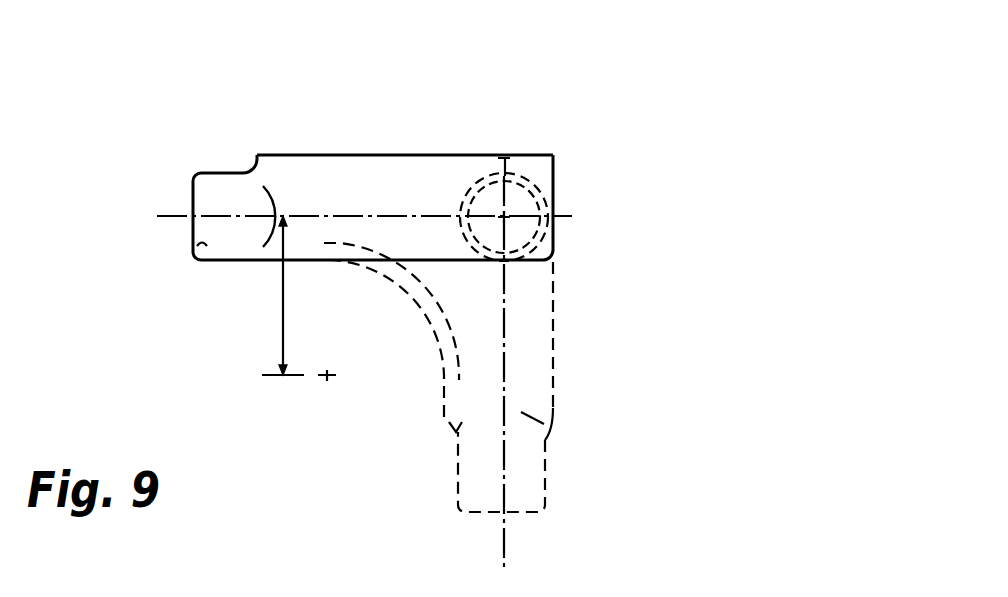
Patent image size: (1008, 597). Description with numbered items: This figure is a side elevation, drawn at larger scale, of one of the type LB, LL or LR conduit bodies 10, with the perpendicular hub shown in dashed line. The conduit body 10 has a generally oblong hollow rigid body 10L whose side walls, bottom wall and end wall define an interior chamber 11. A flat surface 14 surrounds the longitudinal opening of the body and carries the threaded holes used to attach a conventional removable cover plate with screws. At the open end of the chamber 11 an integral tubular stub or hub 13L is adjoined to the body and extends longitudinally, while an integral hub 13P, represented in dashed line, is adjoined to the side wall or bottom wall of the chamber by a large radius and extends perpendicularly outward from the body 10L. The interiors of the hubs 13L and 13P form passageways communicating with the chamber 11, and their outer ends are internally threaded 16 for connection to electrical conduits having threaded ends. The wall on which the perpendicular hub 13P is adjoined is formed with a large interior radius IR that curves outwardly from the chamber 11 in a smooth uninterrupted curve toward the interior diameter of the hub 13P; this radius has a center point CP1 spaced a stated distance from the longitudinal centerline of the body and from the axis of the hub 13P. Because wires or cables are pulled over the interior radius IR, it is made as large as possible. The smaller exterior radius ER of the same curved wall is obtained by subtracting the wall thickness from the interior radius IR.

The conduit body 10 is at (594, 105).
The hollow rigid body 10L is at (418, 203).
The interior chamber 11 is at (331, 192).
The longitudinal hub 13L is at (227, 190).
The perpendicular hub 13P is at (508, 141).
The flat surface 14 is at (428, 155).
The internal threads 16 is at (185, 247).
The center point CP1 is at (299, 298).
The interior radius IR is at (410, 295).
The exterior radius ER is at (434, 349).